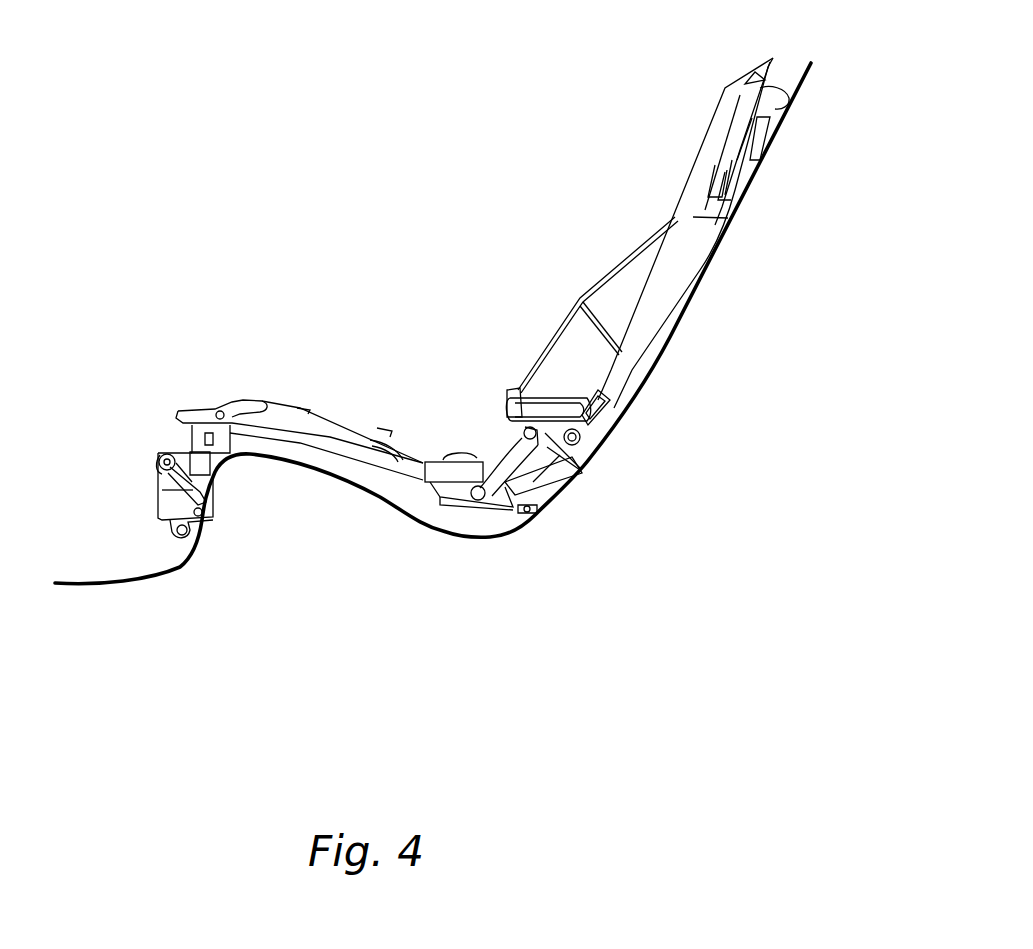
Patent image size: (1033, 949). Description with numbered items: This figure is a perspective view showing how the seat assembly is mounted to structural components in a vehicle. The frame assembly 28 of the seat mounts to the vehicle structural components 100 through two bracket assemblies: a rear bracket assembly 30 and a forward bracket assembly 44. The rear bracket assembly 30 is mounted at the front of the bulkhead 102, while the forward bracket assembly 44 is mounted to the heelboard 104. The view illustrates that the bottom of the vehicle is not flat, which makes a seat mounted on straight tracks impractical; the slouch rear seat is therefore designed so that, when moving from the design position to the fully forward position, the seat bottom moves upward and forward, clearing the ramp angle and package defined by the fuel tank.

The frame assembly 28 is at (209, 194).
The rear bracket assembly 30 is at (585, 470).
The forward bracket assembly 44 is at (153, 460).
The vehicle structural components 100 is at (395, 610).
The bulkhead 102 is at (562, 488).
The heelboard 104 is at (205, 520).